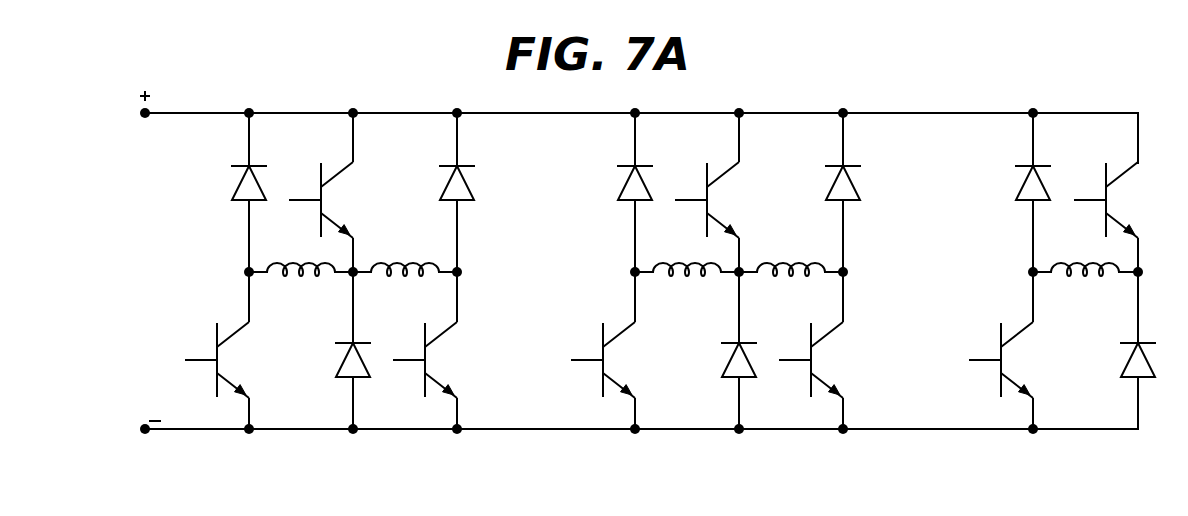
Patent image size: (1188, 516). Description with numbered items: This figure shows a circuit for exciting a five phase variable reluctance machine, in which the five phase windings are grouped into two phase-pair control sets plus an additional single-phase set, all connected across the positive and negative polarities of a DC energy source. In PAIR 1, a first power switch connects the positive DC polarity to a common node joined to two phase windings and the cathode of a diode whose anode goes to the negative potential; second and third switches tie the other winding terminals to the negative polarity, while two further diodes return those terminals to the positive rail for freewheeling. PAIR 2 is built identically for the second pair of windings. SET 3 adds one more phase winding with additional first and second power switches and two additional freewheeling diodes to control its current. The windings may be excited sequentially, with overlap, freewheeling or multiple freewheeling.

The phase-pair control set PAIR 1 is at (351, 315).
The phase-pair control set PAIR 2 is at (739, 315).
The phase control set SET 3 is at (1071, 315).